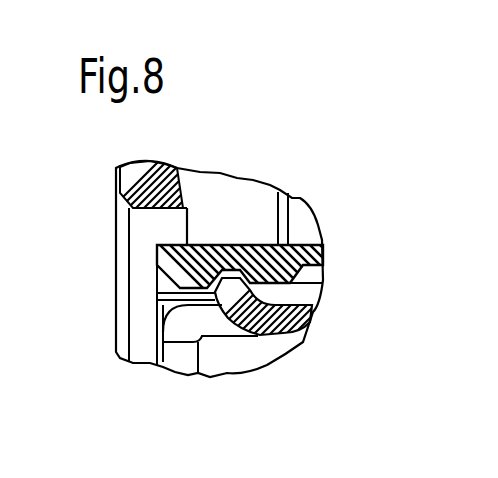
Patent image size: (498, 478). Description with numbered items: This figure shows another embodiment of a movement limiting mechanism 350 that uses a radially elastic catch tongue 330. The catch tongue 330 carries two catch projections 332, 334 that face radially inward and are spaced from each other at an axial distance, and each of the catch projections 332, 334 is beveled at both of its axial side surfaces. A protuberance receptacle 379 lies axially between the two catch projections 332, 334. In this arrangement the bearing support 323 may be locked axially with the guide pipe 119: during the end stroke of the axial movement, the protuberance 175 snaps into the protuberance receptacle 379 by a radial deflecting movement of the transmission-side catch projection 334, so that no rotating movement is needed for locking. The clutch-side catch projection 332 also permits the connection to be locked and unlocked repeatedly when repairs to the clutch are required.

The catch tongue 330 is at (262, 247).
The protuberance receptacle 379 is at (265, 255).
The bearing support 323 is at (322, 244).
The transmission-side catch projection 334 is at (318, 282).
The guide pipe 119 is at (306, 324).
The movement limiting mechanism 350 is at (291, 363).
The clutch-side catch projection 332 is at (163, 268).
The protuberance 175 is at (222, 300).